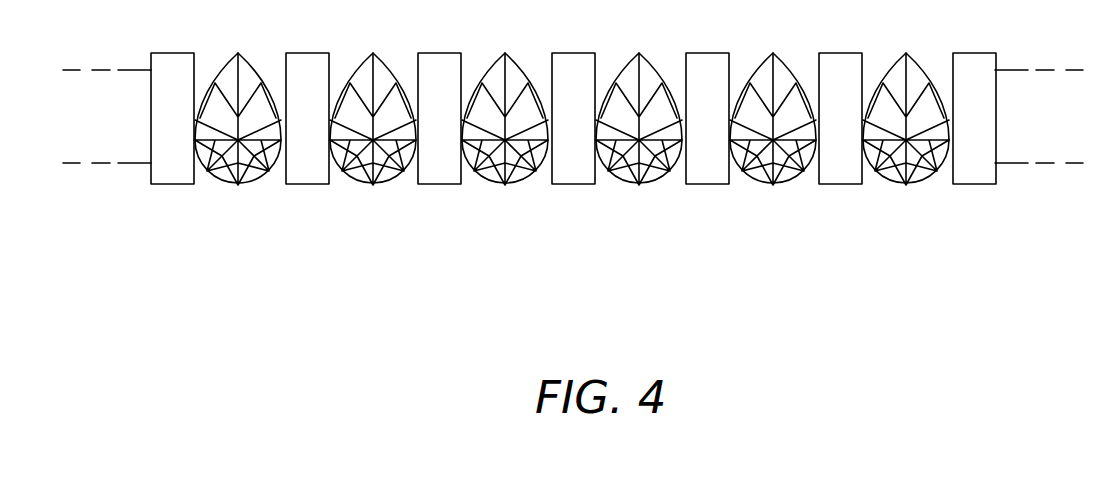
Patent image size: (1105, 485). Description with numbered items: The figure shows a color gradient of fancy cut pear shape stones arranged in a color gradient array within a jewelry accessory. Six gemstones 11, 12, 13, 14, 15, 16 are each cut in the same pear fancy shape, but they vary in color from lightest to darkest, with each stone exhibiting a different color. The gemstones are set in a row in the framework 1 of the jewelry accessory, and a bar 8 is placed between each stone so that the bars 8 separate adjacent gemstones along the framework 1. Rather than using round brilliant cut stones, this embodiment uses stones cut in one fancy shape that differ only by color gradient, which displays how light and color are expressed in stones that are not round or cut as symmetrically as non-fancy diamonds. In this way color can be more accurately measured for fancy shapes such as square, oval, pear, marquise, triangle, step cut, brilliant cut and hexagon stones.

The framework 1 is at (108, 163).
The bars 8 is at (177, 184).
The gemstone 11 is at (242, 185).
The gemstone 12 is at (373, 185).
The gemstone 13 is at (505, 185).
The gemstone 14 is at (645, 185).
The gemstone 15 is at (780, 185).
The gemstone 16 is at (905, 185).